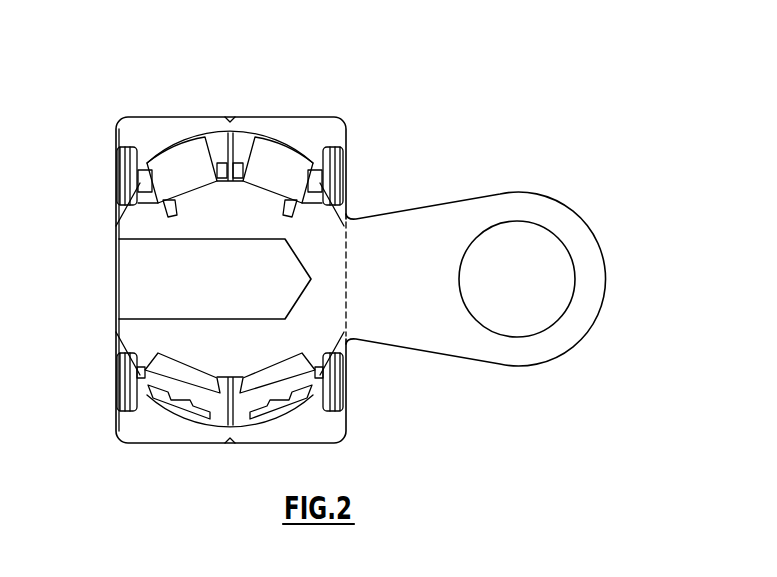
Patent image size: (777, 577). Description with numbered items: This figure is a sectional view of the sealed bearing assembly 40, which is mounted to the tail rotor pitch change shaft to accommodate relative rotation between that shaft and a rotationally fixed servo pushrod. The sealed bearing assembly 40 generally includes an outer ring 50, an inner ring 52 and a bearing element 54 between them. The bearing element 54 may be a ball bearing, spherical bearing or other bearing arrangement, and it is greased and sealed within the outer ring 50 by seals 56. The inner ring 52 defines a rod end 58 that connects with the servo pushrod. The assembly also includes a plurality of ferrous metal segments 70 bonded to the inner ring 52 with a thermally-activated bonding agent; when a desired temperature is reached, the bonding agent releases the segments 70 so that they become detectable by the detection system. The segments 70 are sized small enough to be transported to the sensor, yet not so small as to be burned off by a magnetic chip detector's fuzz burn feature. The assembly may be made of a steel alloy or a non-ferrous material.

The sealed bearing assembly 40 is at (334, 250).
The outer ring 50 is at (120, 425).
The inner ring 52 is at (120, 228).
The bearing element 54 is at (268, 157).
The seals 56 is at (346, 173).
The rod end 58 is at (545, 212).
The ferrous metal segments 70 is at (348, 216).